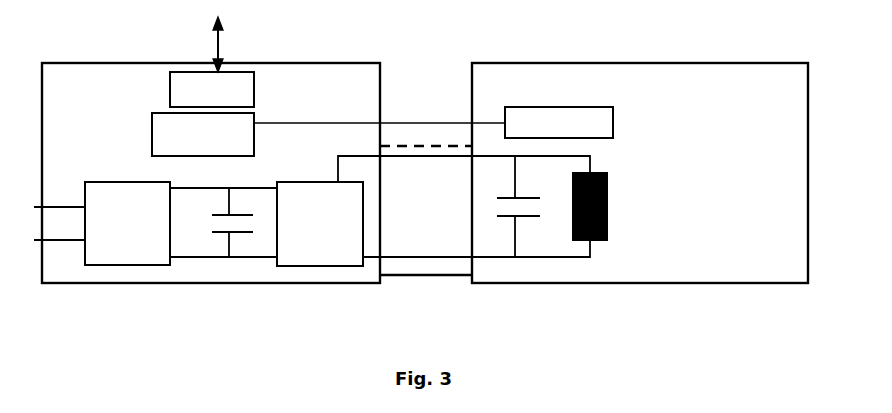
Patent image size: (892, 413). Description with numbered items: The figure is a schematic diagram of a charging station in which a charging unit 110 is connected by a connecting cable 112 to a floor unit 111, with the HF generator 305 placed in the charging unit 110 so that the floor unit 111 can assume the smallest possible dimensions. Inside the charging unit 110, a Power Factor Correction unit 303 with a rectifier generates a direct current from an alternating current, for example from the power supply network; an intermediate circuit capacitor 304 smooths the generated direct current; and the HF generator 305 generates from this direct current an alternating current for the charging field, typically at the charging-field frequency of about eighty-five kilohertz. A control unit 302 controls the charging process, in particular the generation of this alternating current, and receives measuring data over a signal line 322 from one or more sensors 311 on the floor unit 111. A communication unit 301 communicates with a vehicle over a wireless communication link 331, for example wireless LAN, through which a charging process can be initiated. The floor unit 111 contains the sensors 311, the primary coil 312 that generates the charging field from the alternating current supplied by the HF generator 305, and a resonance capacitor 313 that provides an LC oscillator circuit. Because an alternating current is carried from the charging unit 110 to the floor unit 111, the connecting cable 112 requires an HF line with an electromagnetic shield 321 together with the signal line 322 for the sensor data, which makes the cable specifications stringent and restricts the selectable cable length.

The charging unit 110 is at (332, 63).
The floor unit 111 is at (468, 68).
The connecting cable 112 is at (420, 287).
The communication unit 301 is at (254, 77).
The control unit 302 is at (152, 117).
The Power Factor Correction (PFC) unit 303 is at (95, 182).
The intermediate circuit capacitor 304 is at (237, 234).
The HF generator 305 is at (287, 182).
The sensors 311 is at (613, 120).
The primary coil 312 is at (608, 196).
The resonance capacitor 313 is at (528, 196).
The electromagnetic shield 321 is at (424, 148).
The signal line 322 is at (424, 123).
The wireless communication link 331 is at (216, 40).